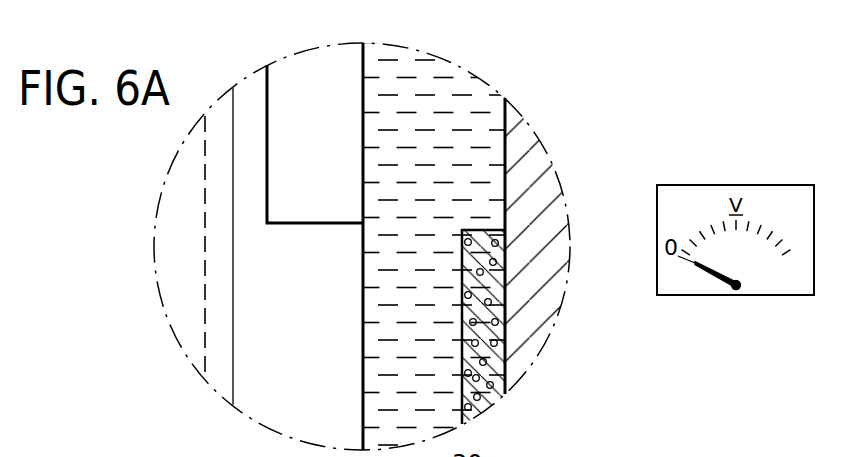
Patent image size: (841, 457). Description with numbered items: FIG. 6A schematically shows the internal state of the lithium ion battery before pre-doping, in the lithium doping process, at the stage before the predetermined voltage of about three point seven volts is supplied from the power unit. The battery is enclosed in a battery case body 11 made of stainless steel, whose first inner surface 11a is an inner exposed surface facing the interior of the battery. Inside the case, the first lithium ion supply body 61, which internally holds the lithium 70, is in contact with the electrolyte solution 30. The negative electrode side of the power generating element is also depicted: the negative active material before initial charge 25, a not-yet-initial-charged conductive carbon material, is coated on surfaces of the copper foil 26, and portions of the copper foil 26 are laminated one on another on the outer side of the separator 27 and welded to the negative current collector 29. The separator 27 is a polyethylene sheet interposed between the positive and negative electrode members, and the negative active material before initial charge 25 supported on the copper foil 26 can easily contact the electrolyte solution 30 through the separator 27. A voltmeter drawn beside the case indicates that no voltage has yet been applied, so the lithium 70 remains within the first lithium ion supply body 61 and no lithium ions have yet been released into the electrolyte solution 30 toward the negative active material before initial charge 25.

The battery case body 11 is at (540, 166).
The first inner surface 11a is at (506, 116).
The negative active material before initial charge 25 is at (178, 302).
The copper foil 26 is at (313, 347).
The separator 27 is at (218, 183).
The negative current collector 29 is at (338, 124).
The electrolyte solution 30 is at (413, 80).
The first lithium ion supply body 61 is at (482, 402).
The lithium 70 is at (480, 229).